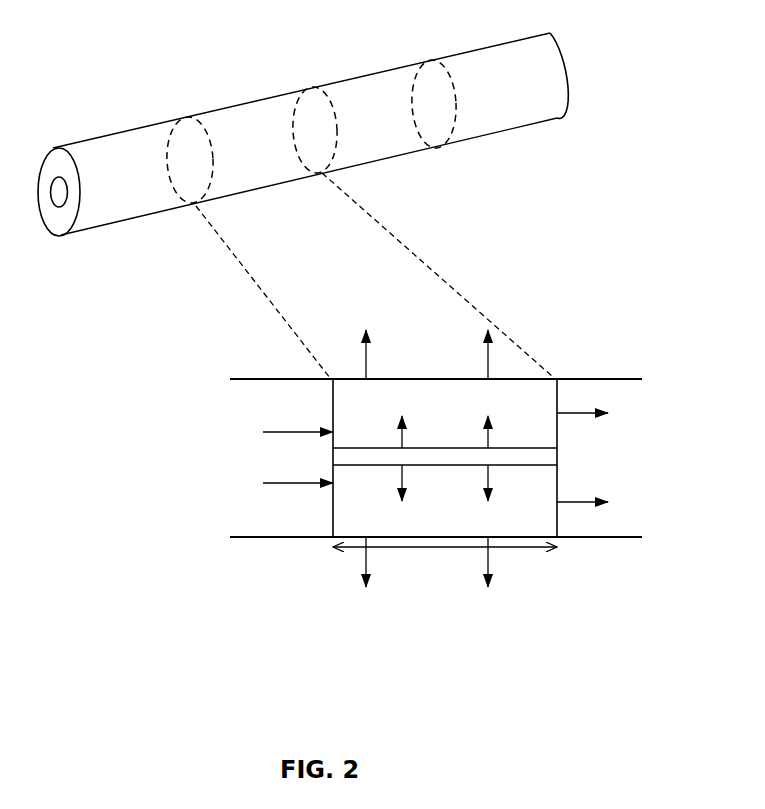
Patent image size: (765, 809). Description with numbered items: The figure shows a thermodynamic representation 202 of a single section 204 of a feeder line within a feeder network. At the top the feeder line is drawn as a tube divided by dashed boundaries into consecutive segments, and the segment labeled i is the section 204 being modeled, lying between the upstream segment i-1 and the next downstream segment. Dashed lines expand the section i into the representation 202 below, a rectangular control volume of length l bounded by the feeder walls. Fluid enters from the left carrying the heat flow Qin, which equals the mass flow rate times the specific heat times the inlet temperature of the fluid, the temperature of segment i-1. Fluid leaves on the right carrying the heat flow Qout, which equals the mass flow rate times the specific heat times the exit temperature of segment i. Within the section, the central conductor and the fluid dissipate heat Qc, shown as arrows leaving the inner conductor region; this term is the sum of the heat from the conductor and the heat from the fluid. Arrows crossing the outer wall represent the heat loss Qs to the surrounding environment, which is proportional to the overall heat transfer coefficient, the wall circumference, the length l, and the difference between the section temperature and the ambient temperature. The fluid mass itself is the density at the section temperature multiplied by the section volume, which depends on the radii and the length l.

The section of the feeder line 204 is at (303, 133).
The thermodynamic representation 202 is at (473, 380).
The preceding feeder section i-1 is at (161, 160).
The feeder section i is at (292, 130).
The heat loss to the surrounding environment Qs is at (427, 385).
The heat dissipated by the conductor and fluid Qc is at (427, 526).
The inlet heat flow Qin is at (289, 457).
The outlet heat flow Qout is at (594, 457).
The length of the feeder section l is at (445, 563).